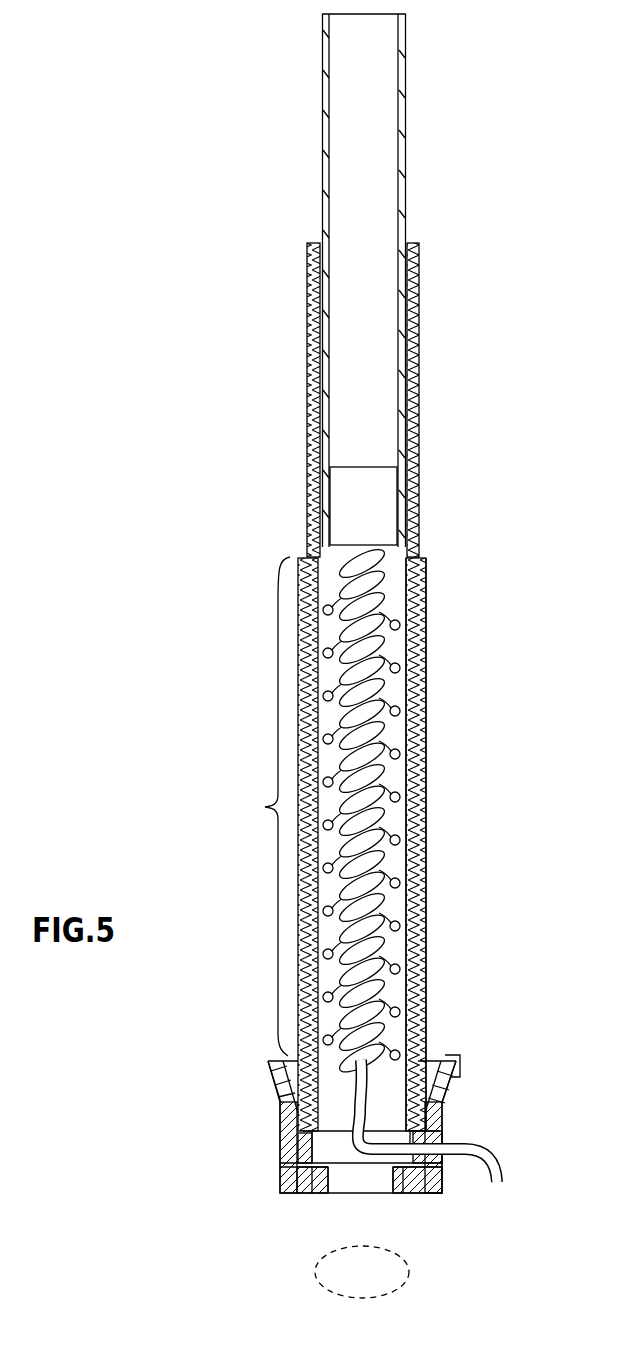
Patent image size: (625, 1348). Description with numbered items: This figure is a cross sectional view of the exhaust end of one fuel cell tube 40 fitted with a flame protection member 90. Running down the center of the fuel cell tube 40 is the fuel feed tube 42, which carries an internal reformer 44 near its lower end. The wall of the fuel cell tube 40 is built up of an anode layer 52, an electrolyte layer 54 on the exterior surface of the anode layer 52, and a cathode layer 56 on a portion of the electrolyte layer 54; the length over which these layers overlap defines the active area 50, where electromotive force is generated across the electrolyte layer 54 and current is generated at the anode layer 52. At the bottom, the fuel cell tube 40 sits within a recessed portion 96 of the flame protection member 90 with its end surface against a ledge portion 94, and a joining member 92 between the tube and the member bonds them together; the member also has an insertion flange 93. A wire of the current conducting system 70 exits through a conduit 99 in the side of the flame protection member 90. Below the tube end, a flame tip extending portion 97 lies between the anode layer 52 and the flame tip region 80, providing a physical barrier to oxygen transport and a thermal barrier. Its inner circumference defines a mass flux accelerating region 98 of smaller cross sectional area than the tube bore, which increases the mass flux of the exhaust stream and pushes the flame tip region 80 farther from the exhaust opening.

The fuel cell tube 40 is at (412, 262).
The fuel feed tube 42 is at (409, 152).
The internal reformer 44 is at (368, 492).
The active area 50 is at (272, 844).
The anode layer 52 is at (410, 1053).
The electrolyte layer 54 is at (417, 1017).
The cathode layer 56 is at (421, 985).
The current conducting system 70 is at (503, 1171).
The flame tip region 80 is at (362, 1272).
The flame protection member 90 is at (268, 1058).
The joining member 92 is at (424, 1114).
The insertion flange 93 is at (463, 1073).
The ledge portion 94 is at (287, 1120).
The recessed portion 96 is at (281, 1165).
The flame tip extending portion 97 is at (278, 1184).
The mass flux accelerating region 98 is at (410, 1180).
The conduit 99 is at (453, 1138).